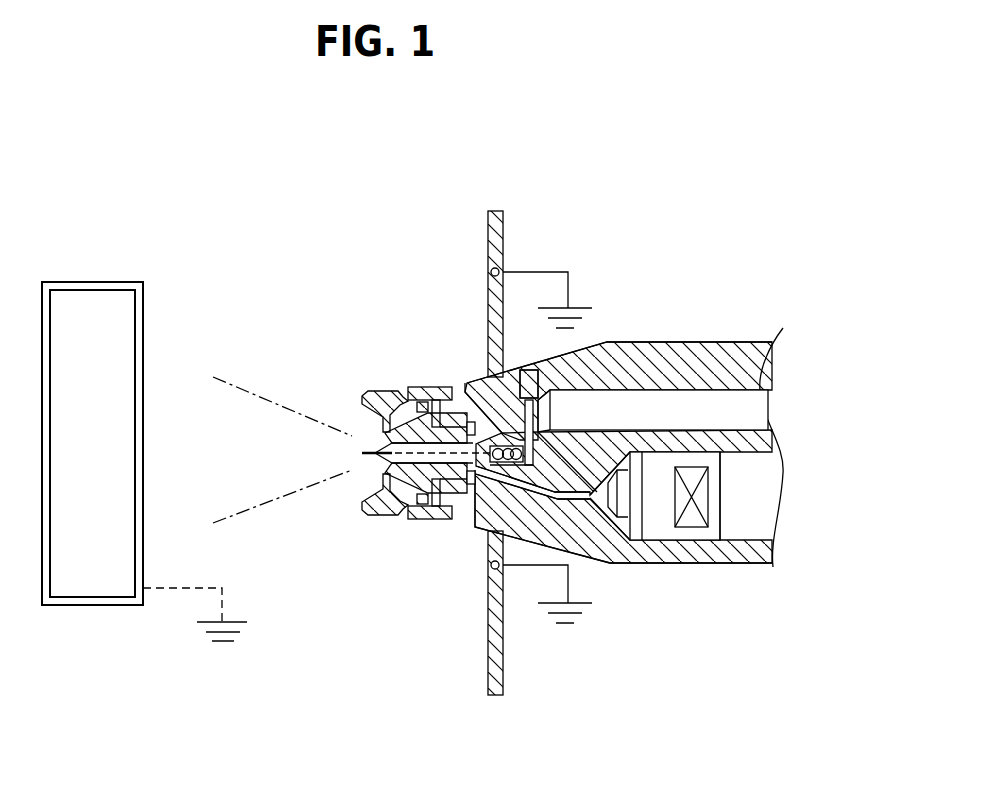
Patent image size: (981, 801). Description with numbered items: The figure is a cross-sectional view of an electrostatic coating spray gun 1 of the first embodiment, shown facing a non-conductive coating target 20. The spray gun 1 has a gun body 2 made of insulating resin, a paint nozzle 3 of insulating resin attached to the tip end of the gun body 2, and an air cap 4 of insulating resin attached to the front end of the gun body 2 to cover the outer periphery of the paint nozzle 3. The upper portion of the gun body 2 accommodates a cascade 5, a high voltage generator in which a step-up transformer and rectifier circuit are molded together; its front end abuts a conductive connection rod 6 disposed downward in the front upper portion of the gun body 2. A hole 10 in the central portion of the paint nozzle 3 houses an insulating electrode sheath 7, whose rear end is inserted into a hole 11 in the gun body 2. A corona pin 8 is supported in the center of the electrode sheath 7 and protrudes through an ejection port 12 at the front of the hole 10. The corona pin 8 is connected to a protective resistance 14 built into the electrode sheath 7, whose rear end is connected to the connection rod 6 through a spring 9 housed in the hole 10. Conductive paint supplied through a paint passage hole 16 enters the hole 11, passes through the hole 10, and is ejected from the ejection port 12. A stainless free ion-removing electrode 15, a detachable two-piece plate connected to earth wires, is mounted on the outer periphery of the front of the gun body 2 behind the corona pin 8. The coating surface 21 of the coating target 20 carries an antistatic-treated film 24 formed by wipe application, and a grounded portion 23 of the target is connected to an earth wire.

The spray gun 1 is at (740, 233).
The gun body 2 is at (727, 342).
The paint nozzle 3 is at (400, 513).
The air cap 4 is at (380, 394).
The cascade 5 is at (672, 398).
The connection rod 6 is at (512, 437).
The electrode sheath 7 is at (463, 507).
The corona pin 8 is at (352, 437).
The spring 9 is at (466, 381).
The hole 10 is at (410, 388).
The hole 11 is at (470, 486).
The ejection port 12 is at (365, 477).
The protective resistance 14 is at (433, 517).
The free ion-removing electrode 15 is at (488, 226).
The paint passage hole 16 is at (603, 553).
The non-conductive coating target 20 is at (117, 313).
The coating surface 21 is at (135, 342).
The grounded portion 23 is at (143, 588).
The antistatic-treated film 24 is at (145, 438).